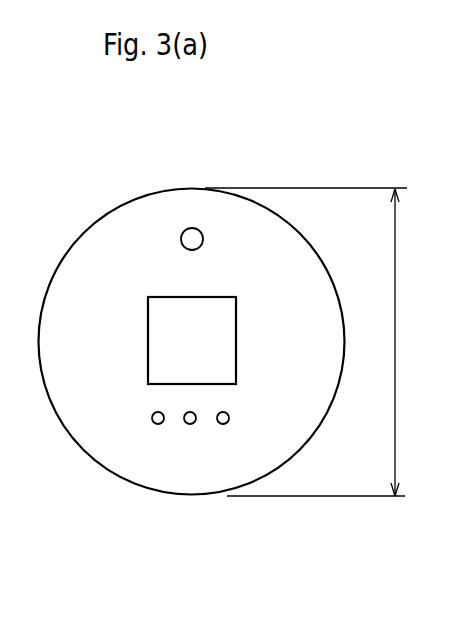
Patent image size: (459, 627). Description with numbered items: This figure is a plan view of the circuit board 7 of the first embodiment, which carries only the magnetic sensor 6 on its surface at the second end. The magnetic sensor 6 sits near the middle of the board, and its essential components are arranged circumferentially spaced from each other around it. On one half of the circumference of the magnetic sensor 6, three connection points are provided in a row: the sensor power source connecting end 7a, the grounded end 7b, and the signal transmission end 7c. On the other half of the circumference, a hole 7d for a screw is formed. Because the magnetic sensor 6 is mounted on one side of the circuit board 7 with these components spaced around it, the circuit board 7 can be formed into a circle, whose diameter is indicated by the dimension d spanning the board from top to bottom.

The disk-shaped chamber member 7 is at (49, 291).
The square opening 6 is at (147, 362).
The hole 7d is at (192, 239).
The small hole 7a is at (158, 424).
The small hole 7b is at (190, 424).
The small hole 7c is at (223, 424).
The diameter dimension d is at (311, 342).